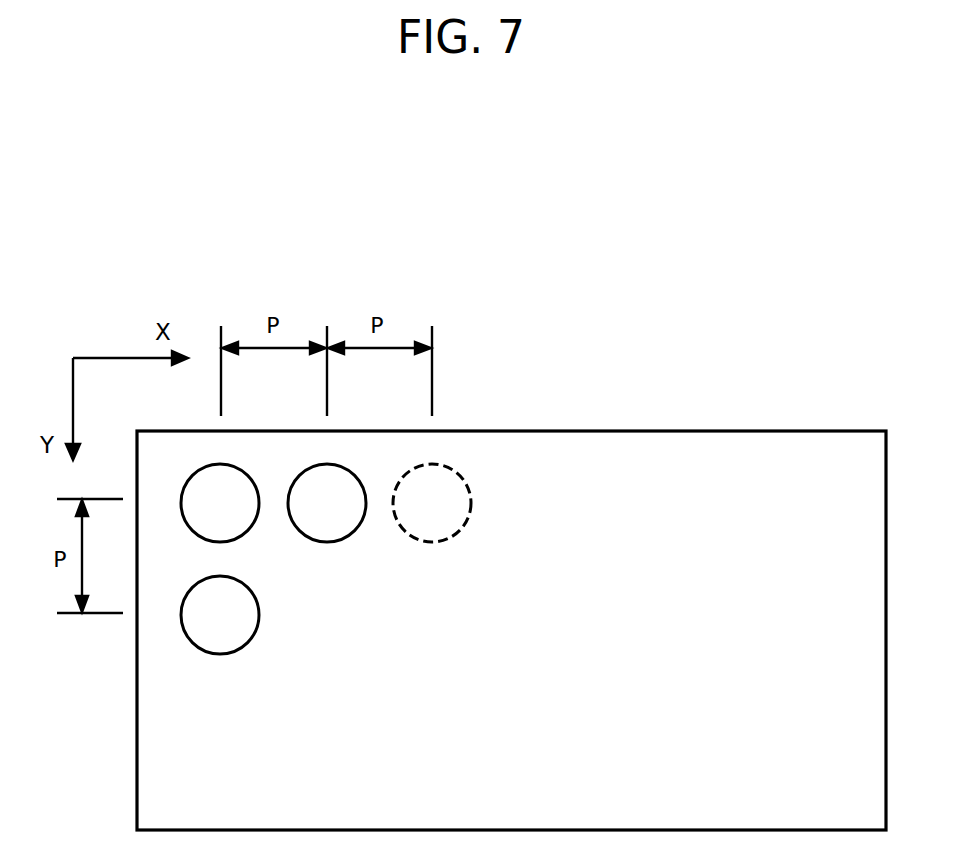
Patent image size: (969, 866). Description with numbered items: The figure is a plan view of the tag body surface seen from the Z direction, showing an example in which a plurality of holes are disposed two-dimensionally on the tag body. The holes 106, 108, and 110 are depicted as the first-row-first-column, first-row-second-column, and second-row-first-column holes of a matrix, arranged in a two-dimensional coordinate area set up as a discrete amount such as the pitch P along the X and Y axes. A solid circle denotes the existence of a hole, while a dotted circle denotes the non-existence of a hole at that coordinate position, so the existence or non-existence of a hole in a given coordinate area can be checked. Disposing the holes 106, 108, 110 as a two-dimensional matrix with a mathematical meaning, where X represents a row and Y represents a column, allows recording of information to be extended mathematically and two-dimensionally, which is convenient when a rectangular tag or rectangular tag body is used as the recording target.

The hole 106 is at (243, 535).
The hole 108 is at (340, 537).
The hole 110 is at (220, 654).